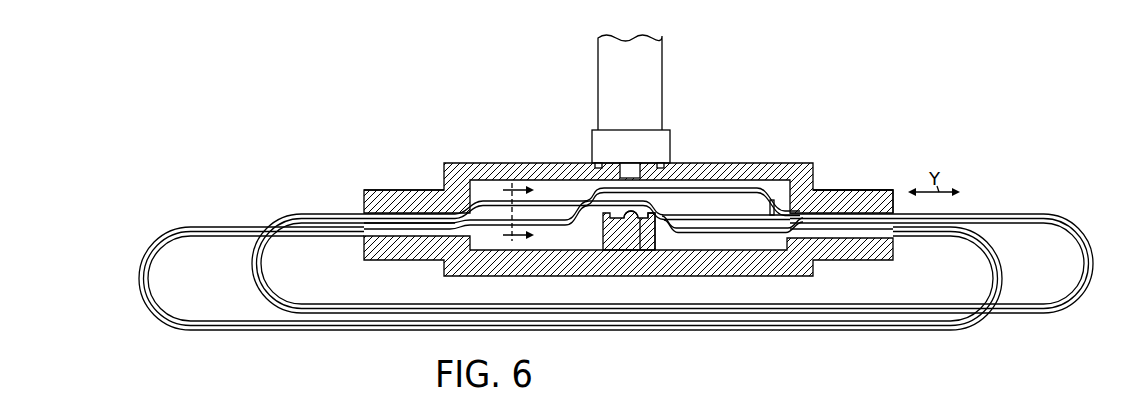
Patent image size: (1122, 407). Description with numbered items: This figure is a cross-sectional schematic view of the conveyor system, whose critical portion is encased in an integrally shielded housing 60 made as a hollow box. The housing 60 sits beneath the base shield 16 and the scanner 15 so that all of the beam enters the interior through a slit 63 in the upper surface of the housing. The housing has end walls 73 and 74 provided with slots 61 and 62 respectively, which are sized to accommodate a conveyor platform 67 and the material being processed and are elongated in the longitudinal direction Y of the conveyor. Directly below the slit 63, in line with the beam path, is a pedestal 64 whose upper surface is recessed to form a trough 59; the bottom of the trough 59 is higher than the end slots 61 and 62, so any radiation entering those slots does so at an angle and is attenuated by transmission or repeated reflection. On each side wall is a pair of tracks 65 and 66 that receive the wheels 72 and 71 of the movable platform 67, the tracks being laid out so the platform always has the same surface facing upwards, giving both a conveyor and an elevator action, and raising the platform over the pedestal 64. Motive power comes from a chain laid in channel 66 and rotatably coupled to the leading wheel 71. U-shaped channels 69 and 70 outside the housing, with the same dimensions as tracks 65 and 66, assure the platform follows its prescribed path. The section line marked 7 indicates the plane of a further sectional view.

The section line 7- 7 is at (526, 213).
The scanner 15 is at (658, 104).
The base shield 16 is at (671, 148).
The trough 59 is at (630, 221).
The housing 60 is at (457, 165).
The slot 61 is at (372, 225).
The slot 62 is at (891, 243).
The slit 63 is at (624, 172).
The pedestal 64 is at (611, 219).
The track 65 is at (714, 184).
The track 66 is at (833, 231).
The platform 67 is at (756, 203).
The U-shaped channel 69 is at (256, 283).
The U-shaped channel 70 is at (232, 228).
The leading wheel 71 is at (657, 214).
The wheel 72 is at (775, 207).
The end wall 73 is at (420, 191).
The end wall 74 is at (872, 190).